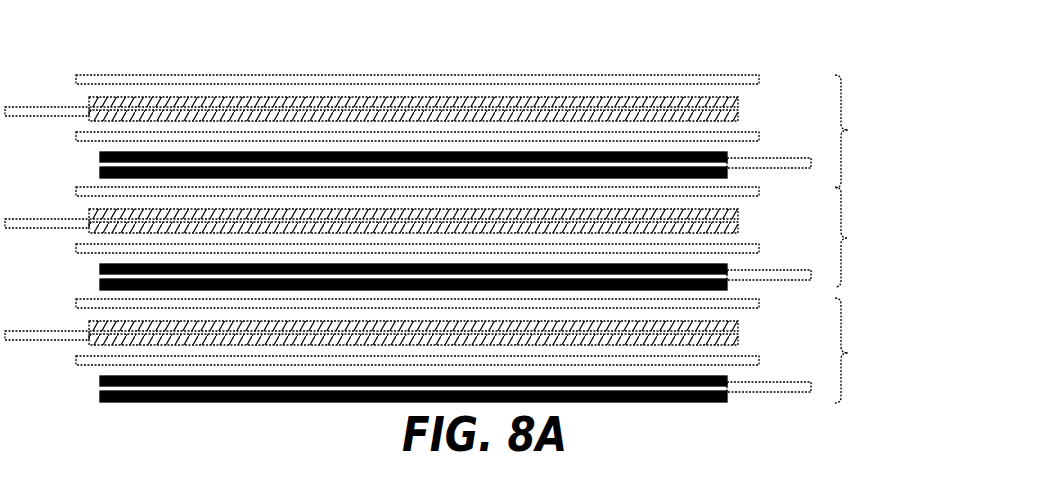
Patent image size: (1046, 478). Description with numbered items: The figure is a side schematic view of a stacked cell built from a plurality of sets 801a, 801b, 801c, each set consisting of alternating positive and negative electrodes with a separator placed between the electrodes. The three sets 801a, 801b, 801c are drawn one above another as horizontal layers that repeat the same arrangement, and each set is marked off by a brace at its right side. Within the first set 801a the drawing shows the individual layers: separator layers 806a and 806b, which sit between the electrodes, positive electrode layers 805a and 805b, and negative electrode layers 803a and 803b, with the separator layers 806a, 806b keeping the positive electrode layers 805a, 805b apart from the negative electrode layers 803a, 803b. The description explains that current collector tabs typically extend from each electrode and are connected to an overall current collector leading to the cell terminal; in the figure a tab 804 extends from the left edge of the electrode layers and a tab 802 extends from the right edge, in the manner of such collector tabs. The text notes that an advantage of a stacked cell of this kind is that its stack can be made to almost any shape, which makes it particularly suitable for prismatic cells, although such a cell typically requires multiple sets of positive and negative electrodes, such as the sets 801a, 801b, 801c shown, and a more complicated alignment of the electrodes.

The first set of electrodes and separator 801a is at (462, 104).
The second set of electrodes and separator 801b is at (461, 238).
The third set of electrodes and separator 801c is at (462, 350).
The negative electrode lead tab 802 is at (783, 160).
The first negative electrode layer 803a is at (668, 153).
The second negative electrode layer 803b is at (577, 173).
The positive electrode lead tab 804 is at (39, 107).
The first positive electrode layer 805a is at (143, 117).
The second positive electrode layer 805b is at (243, 99).
The first separator layer 806a is at (485, 82).
The second separator layer 806b is at (412, 130).